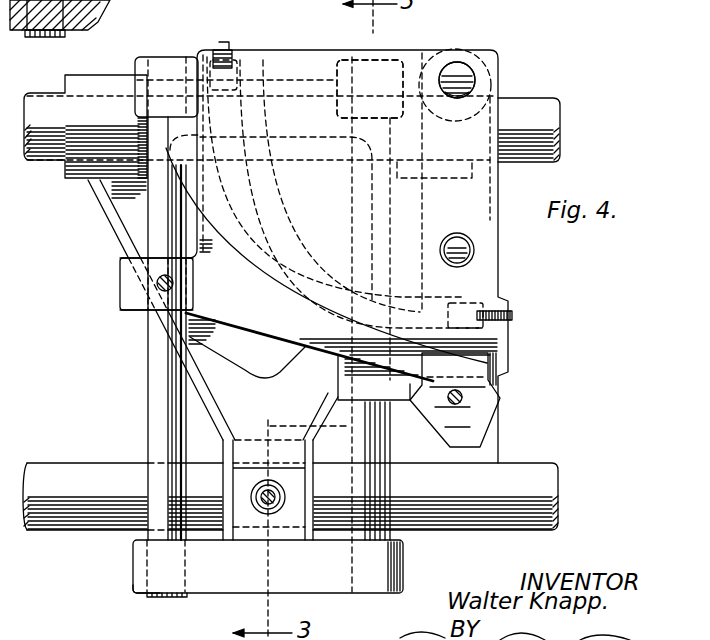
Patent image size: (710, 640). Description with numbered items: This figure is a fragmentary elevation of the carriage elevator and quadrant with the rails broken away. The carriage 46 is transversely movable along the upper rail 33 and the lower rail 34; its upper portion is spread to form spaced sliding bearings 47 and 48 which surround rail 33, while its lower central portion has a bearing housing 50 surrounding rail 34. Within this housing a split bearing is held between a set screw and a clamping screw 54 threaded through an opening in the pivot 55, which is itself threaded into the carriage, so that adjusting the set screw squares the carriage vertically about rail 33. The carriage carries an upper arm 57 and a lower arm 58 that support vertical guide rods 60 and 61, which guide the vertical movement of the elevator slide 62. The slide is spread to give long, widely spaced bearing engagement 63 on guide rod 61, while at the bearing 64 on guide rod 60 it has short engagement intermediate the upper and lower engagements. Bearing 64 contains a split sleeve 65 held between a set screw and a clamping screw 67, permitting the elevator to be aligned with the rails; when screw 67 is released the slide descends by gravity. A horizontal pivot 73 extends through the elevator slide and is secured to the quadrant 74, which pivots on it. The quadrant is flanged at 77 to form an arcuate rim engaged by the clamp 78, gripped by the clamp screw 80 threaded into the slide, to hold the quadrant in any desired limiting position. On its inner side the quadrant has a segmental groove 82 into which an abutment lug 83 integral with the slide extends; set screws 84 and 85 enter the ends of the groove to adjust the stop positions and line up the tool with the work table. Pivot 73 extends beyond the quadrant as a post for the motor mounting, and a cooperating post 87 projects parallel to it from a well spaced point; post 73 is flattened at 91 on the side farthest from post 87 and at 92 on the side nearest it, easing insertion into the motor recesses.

The rail 33 is at (540, 107).
The rail 34 is at (533, 476).
The carriage 46 is at (230, 580).
The sliding bearing 47 is at (97, 82).
The sliding bearing 48 is at (411, 55).
The bearing housing 50 is at (233, 480).
The clamping screw 54 is at (264, 508).
The pivot 55 is at (277, 508).
The arm 57 is at (156, 66).
The arm 58 is at (158, 582).
The guide rod 60 is at (155, 409).
The guide rod 61 is at (376, 456).
The elevator slide 62 is at (135, 314).
The bearing engagement 63 is at (360, 380).
The bearing 64 is at (155, 280).
The split sleeve 65 is at (146, 286).
The clamping screw 67 is at (162, 276).
The pivot 73 is at (460, 64).
The quadrant 74 is at (457, 230).
The flange 77 is at (256, 259).
The clamp 78 is at (458, 424).
The clamp screw 80 is at (465, 397).
The segmental groove 82 is at (302, 275).
The abutment lug 83 is at (500, 297).
The set screw 84 is at (226, 43).
The set screw 85 is at (514, 316).
The post 87 is at (472, 242).
The flattened side 91 is at (457, 66).
The flattened side 92 is at (459, 99).